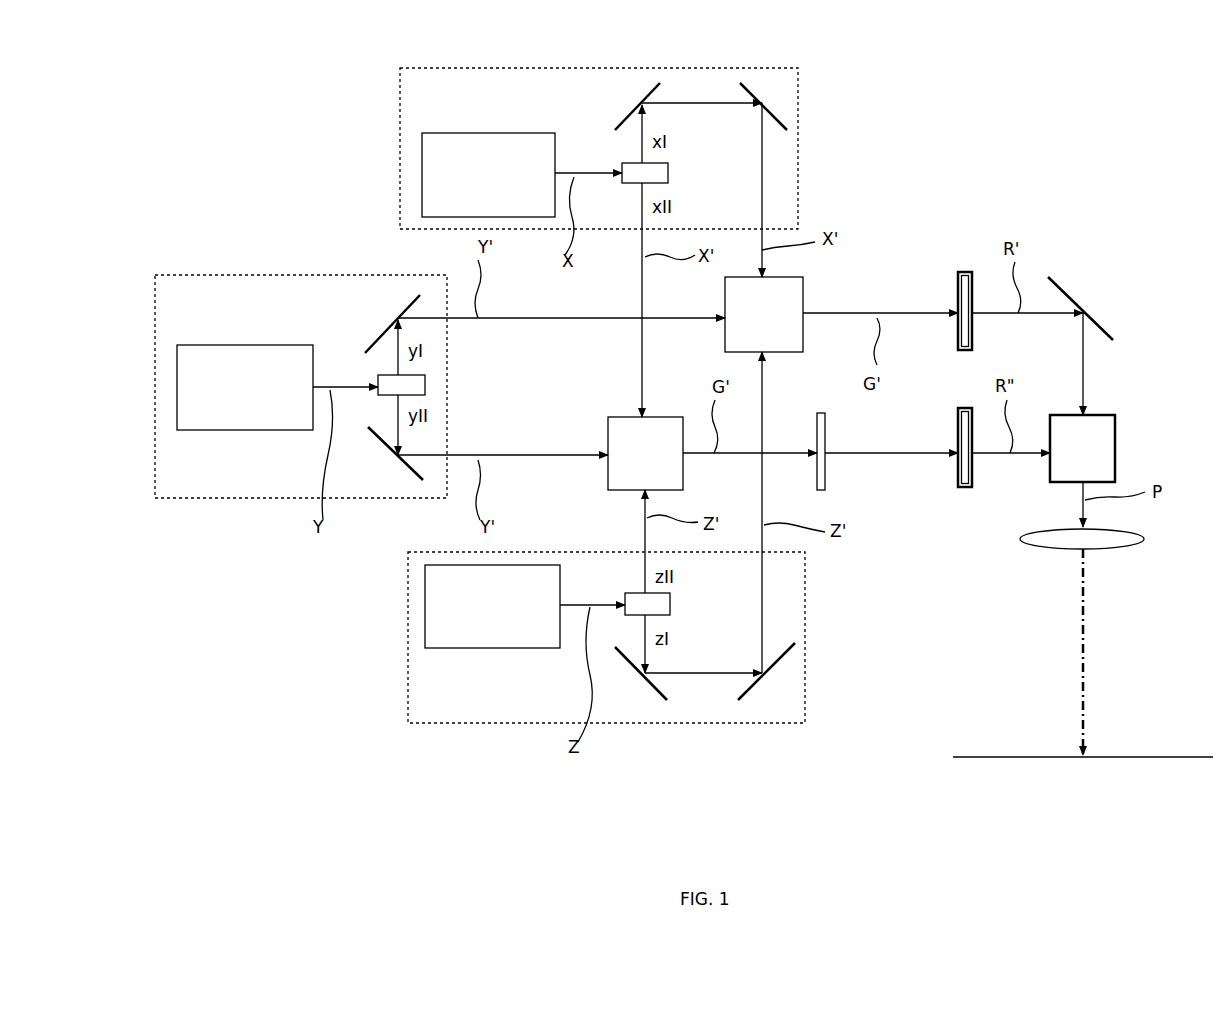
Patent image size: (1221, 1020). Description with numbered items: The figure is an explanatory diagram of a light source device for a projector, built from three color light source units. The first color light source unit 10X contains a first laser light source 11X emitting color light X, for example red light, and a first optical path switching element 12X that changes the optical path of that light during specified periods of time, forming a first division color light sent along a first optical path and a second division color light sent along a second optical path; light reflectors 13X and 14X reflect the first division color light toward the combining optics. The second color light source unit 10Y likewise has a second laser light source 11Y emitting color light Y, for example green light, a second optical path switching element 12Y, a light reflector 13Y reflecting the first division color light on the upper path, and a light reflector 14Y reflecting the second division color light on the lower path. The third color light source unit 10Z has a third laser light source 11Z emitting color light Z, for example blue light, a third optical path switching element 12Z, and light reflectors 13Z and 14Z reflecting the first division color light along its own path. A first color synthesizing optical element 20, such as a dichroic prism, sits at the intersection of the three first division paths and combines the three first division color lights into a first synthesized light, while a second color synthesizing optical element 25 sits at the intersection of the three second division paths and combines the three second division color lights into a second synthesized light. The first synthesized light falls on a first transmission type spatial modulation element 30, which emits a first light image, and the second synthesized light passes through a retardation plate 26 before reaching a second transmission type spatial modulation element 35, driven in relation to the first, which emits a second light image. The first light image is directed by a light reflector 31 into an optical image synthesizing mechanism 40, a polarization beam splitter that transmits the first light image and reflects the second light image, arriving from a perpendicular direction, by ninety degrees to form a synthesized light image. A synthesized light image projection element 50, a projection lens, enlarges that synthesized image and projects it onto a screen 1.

The screen 1 is at (1177, 755).
The first color light source unit 10X is at (400, 113).
The second color light source unit 10Y is at (178, 275).
The third color light source unit 10Z is at (408, 631).
The first laser light source 11X is at (472, 133).
The second laser light source 11Y is at (272, 345).
The third laser light source 11Z is at (478, 648).
The first optical path switching element 12X is at (623, 185).
The second optical path switching element 12Y is at (425, 387).
The third optical path switching element 12Z is at (630, 593).
The light reflector 13X is at (632, 107).
The light reflector 13Y is at (376, 325).
The light reflector 13Z is at (635, 680).
The light reflector 14X is at (773, 92).
The light reflector 14Y is at (378, 445).
The light reflector 14Z is at (773, 680).
The first color synthesizing optical element 20 is at (803, 291).
The second color synthesizing optical element 25 is at (668, 417).
The retardation plate 26 is at (821, 413).
The first transmission type spatial modulation element 30 is at (965, 272).
The light reflector 31 is at (1070, 298).
The second transmission type spatial modulation element 35 is at (965, 487).
The optical image synthesizing mechanism 40 is at (1115, 430).
The synthesized light image projection element 50 is at (1048, 550).